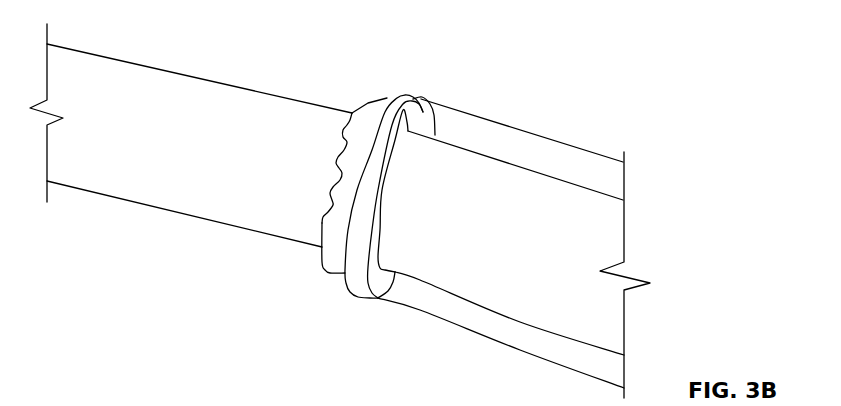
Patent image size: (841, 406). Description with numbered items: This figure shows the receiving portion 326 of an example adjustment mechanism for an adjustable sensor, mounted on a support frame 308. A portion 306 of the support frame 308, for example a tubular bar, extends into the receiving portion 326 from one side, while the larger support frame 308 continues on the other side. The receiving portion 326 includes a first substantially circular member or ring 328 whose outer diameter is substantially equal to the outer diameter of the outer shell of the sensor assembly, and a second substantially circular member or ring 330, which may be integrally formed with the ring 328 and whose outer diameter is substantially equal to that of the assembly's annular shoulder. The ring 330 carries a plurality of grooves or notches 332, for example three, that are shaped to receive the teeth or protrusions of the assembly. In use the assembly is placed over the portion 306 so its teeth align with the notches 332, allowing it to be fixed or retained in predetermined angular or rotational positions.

The portion of a support frame 306 is at (72, 48).
The support frame 308 is at (513, 126).
The receiving portion 326 is at (443, 60).
The first substantially circular member or ring 328 is at (411, 95).
The second substantially circular member or ring 330 is at (315, 174).
The grooves or notches 332 is at (319, 166).